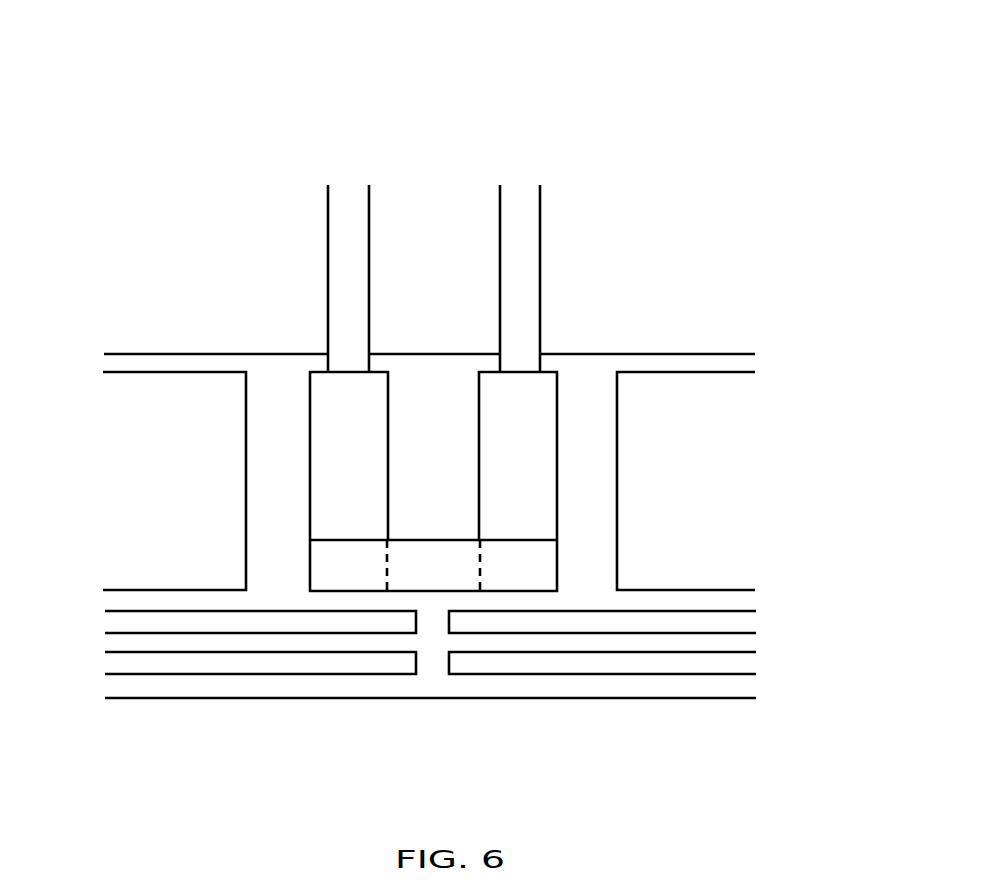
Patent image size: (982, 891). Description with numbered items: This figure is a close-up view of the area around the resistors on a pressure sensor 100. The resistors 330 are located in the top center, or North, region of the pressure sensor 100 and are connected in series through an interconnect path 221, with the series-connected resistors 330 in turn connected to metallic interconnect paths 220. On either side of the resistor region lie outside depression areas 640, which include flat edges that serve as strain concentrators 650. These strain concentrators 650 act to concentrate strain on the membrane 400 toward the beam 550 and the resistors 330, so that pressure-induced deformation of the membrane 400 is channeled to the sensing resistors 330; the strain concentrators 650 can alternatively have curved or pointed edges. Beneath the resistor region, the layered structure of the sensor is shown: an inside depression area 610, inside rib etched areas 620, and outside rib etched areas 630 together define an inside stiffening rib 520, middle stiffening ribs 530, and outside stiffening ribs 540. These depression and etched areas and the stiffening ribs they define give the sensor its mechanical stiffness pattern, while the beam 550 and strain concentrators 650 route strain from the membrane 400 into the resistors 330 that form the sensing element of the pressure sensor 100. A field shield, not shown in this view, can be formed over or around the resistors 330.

The pressure sensor 100 is at (249, 78).
The metallic interconnect paths 220 is at (518, 270).
The interconnect path 221 is at (440, 573).
The resistors 330 is at (542, 481).
The membrane 400 is at (170, 354).
The inside stiffening rib 520 is at (107, 689).
The middle stiffening ribs 530 is at (107, 644).
The outside stiffening ribs 540 is at (103, 598).
The beam 550 is at (260, 527).
The inside depression area 610 is at (740, 725).
The inside rib etched areas 620 is at (740, 664).
The outside rib etched areas 630 is at (740, 622).
The outside depression areas 640 is at (163, 444).
The strain concentrators 650 is at (617, 447).